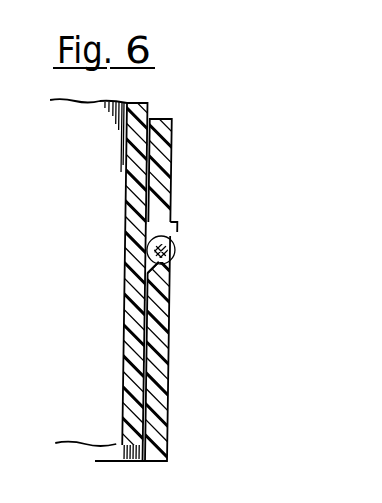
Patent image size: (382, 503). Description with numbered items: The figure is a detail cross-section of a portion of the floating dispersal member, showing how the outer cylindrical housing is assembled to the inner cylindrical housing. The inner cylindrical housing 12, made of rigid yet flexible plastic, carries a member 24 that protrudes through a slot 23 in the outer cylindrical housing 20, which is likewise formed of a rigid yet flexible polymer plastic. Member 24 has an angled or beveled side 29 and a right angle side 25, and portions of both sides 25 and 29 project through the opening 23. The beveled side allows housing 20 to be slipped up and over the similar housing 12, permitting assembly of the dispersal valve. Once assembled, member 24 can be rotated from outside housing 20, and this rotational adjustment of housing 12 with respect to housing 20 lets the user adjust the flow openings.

The inner cylindrical housing 12 is at (123, 222).
The outer cylindrical housing 20 is at (173, 170).
The right angle side 25 is at (178, 222).
The member 24 is at (178, 228).
The slot 23 is at (168, 248).
The beveled side 29 is at (152, 272).